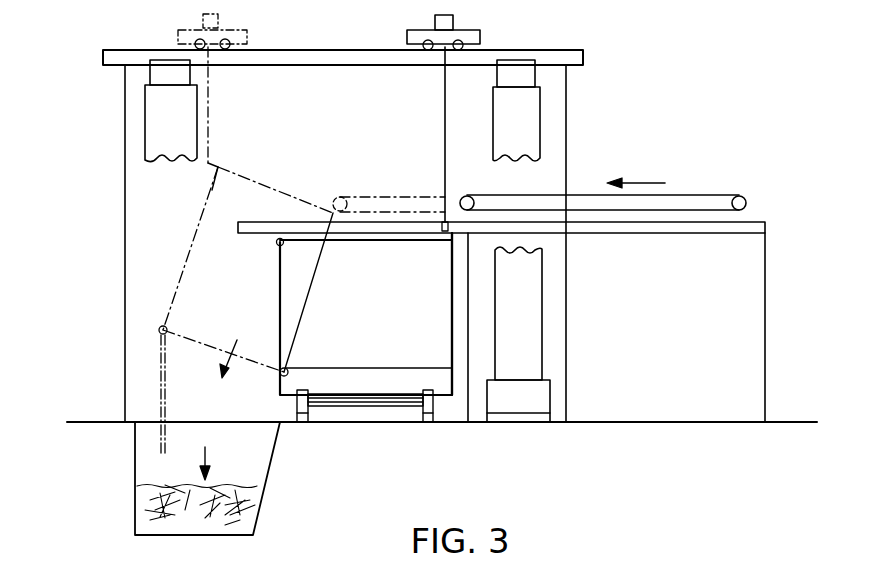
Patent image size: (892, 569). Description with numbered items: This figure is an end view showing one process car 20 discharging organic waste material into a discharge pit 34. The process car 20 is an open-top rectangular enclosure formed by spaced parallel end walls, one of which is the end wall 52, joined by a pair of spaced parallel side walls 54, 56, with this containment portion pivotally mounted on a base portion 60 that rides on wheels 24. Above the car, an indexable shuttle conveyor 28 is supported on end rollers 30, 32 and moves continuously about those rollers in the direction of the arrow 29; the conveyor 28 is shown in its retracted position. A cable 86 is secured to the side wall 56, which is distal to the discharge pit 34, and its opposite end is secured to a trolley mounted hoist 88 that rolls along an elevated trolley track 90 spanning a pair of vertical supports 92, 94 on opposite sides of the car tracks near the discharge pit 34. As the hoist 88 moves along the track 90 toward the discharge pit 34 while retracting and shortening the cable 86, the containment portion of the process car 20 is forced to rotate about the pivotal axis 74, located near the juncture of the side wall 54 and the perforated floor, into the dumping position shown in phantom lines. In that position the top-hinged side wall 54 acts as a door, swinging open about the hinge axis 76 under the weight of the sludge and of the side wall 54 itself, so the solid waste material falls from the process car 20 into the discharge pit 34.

The process car 20 is at (359, 311).
The wheels 24 is at (297, 403).
The indexable shuttle conveyor 28 is at (567, 175).
The arrow 29 is at (650, 183).
The end roller 30 is at (470, 195).
The end roller 32 is at (746, 200).
The discharge pit 34 is at (270, 466).
The end wall 52 is at (438, 348).
The side wall 54 is at (280, 290).
The side wall 56 is at (455, 307).
The base portion 60 is at (378, 390).
The pivotal axis 74 is at (288, 368).
The hinge axis 76 is at (277, 242).
The cable 86 is at (212, 117).
The trolley mounted hoist 88 is at (248, 33).
The trolley track 90 is at (340, 50).
The vertical support 92 is at (540, 113).
The vertical support 94 is at (145, 113).